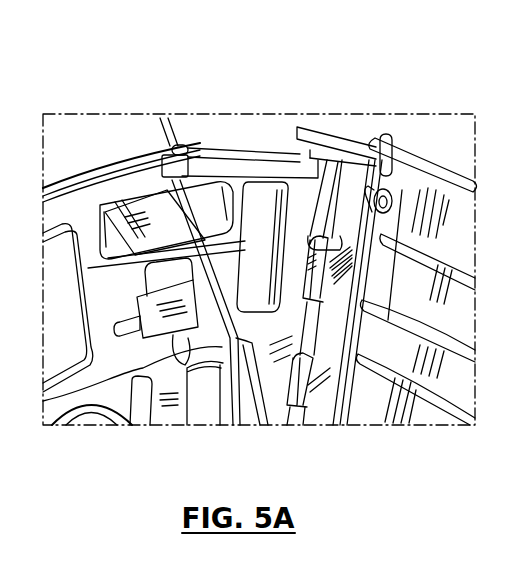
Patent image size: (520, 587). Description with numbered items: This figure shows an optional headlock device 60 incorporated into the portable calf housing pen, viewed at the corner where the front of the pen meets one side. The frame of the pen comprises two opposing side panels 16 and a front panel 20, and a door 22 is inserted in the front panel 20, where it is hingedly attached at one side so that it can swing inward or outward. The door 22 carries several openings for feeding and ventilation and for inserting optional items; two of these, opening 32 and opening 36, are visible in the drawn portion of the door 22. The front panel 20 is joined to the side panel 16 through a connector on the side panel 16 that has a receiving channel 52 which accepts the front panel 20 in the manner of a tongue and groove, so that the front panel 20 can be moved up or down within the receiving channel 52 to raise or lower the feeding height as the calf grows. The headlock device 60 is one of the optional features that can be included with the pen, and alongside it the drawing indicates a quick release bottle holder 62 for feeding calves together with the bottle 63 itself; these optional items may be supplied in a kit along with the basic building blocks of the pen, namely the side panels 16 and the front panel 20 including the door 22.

The side panel 16 is at (448, 207).
The front panel 20 is at (362, 193).
The door 22 is at (74, 188).
The opening 32 is at (265, 200).
The opening 36 is at (55, 340).
The receiving channel 52 is at (402, 151).
The headlock device 60 is at (234, 182).
The quick release bottle holder 62 is at (128, 343).
The bottle 63 is at (127, 212).